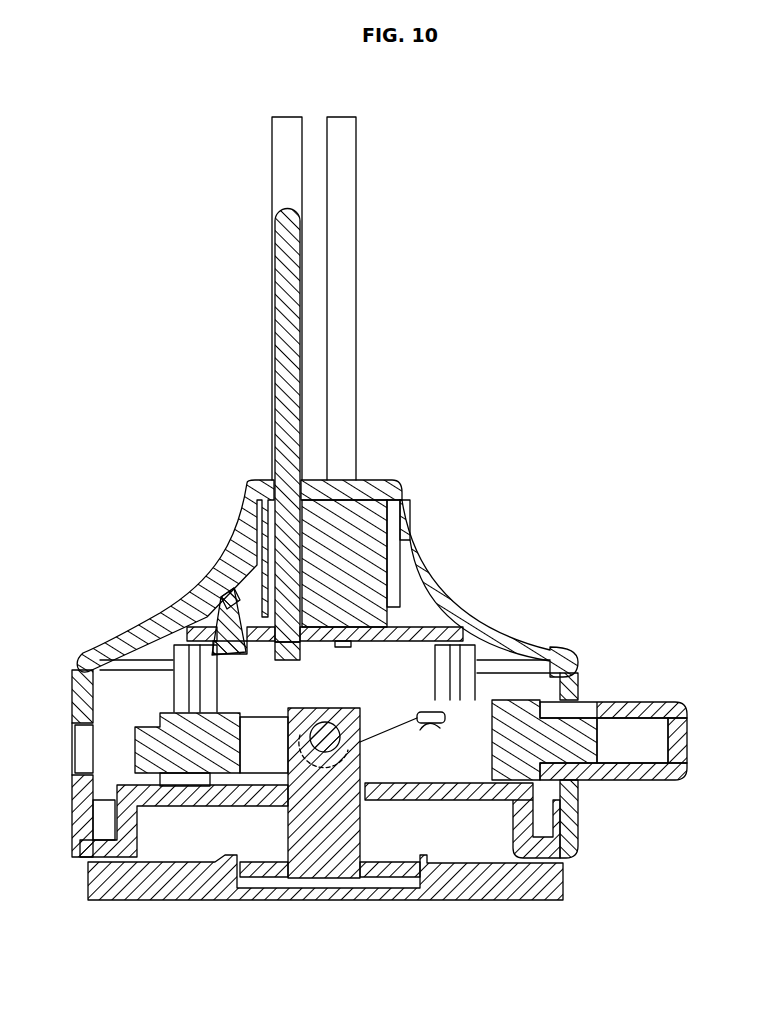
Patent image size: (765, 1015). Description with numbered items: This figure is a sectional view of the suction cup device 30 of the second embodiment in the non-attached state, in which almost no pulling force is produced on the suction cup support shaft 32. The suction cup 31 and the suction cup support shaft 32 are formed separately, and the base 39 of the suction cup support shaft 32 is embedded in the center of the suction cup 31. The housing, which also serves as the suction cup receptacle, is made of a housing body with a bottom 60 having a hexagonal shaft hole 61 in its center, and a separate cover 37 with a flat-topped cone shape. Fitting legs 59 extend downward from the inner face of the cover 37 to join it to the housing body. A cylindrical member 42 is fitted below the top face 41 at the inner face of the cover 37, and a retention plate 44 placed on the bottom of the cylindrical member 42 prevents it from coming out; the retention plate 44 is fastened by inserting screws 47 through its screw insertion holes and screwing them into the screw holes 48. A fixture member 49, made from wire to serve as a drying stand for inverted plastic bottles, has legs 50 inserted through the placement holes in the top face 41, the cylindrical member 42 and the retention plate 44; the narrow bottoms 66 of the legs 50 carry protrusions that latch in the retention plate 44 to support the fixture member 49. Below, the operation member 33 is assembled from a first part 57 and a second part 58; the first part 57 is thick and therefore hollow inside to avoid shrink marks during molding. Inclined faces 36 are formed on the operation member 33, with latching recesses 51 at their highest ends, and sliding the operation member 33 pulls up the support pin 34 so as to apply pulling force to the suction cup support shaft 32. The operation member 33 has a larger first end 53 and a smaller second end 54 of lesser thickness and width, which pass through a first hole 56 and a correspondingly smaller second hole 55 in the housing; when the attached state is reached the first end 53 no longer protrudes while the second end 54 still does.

The suction cup device 30 is at (82, 652).
The suction cup 31 is at (186, 893).
The suction cup support shaft 32 is at (358, 828).
The operation member 33 is at (613, 782).
The support pin 34 is at (332, 740).
The inclined faces 36 is at (388, 730).
The cover 37 is at (415, 557).
The base 39 is at (366, 882).
The top face 41 is at (370, 480).
The cylindrical member 42 is at (372, 527).
The retention plate 44 is at (440, 635).
The screws 47 is at (220, 584).
The screw holes 48 is at (214, 602).
The fixture member 49 is at (275, 163).
The legs 50 is at (278, 428).
The latching recesses 51 is at (432, 727).
The first end 53 is at (688, 738).
The second end 54 is at (137, 753).
The second hole 55 is at (578, 782).
The first hole 56 is at (85, 760).
The first part 57 is at (638, 706).
The second part 58 is at (588, 745).
The fitting legs 59 is at (178, 690).
The bottom 60 is at (437, 800).
The shaft hole 61 is at (287, 808).
The bottoms 66 is at (277, 650).